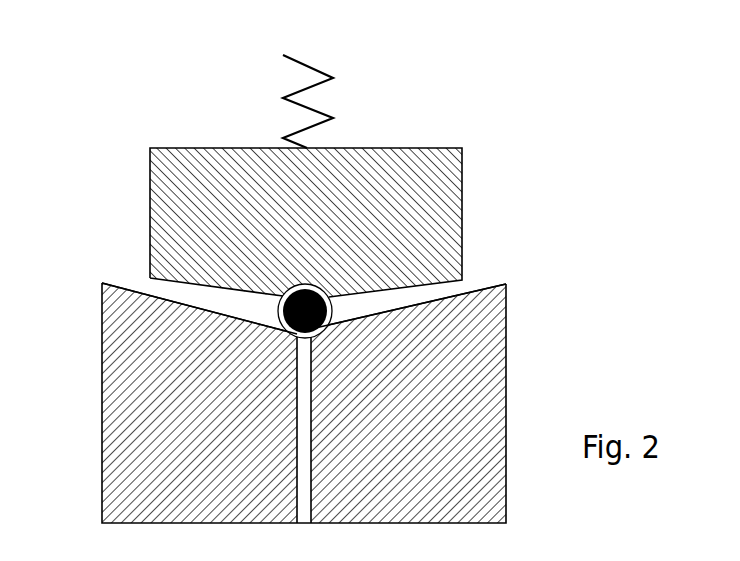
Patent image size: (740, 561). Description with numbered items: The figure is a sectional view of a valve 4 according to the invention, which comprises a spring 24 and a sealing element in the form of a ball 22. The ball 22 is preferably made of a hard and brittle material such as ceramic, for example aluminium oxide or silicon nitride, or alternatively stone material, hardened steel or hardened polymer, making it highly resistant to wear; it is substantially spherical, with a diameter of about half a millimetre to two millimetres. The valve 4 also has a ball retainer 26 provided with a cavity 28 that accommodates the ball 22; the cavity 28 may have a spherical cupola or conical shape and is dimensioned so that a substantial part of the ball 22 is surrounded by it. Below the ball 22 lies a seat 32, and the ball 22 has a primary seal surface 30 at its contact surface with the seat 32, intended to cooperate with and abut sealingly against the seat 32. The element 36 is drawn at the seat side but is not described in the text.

The valve 4 is at (523, 85).
The ball 22 is at (328, 292).
The spring 24 is at (308, 65).
The ball retainer 26 is at (462, 208).
The cavity 28 is at (283, 293).
The primary seal surface 30 is at (327, 320).
The seat 32 is at (507, 392).
The left strip / coating layer 36 is at (284, 325).